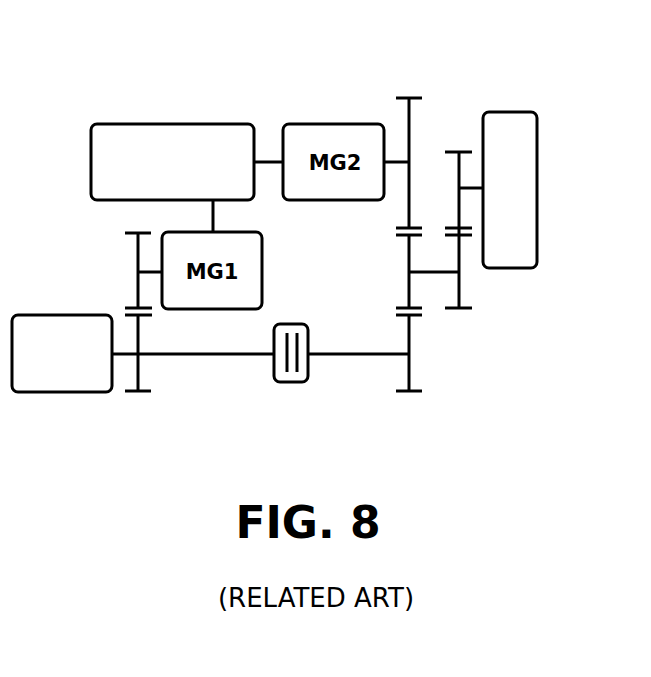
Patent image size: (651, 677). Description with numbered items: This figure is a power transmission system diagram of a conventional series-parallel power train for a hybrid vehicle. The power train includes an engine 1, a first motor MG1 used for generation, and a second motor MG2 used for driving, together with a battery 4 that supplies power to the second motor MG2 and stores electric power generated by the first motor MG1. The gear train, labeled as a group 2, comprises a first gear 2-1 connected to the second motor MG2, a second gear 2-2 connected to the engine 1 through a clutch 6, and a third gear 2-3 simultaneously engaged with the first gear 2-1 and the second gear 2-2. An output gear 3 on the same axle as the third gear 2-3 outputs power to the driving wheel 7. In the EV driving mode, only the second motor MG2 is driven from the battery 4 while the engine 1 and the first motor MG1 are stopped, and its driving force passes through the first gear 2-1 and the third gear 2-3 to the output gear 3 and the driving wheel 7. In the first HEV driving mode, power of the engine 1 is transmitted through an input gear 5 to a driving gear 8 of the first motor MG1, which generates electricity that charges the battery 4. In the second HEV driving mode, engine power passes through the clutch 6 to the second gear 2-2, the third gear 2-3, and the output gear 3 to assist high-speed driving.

The engine 1 is at (52, 393).
The transmission 2 is at (424, 226).
The first gear 2-1 is at (409, 122).
The second gear 2-2 is at (410, 373).
The third gear 2-3 is at (410, 293).
The output gear 3 is at (460, 290).
The battery 4 is at (148, 122).
The input gear 5 is at (140, 373).
The clutch 6 is at (290, 383).
The driving wheel 7 is at (537, 162).
The driving gear 8 is at (138, 290).